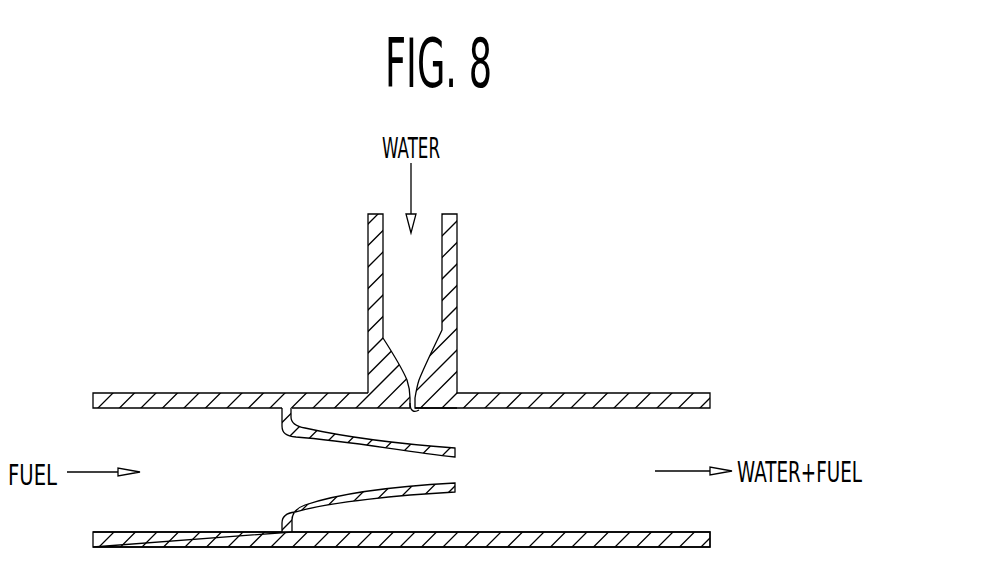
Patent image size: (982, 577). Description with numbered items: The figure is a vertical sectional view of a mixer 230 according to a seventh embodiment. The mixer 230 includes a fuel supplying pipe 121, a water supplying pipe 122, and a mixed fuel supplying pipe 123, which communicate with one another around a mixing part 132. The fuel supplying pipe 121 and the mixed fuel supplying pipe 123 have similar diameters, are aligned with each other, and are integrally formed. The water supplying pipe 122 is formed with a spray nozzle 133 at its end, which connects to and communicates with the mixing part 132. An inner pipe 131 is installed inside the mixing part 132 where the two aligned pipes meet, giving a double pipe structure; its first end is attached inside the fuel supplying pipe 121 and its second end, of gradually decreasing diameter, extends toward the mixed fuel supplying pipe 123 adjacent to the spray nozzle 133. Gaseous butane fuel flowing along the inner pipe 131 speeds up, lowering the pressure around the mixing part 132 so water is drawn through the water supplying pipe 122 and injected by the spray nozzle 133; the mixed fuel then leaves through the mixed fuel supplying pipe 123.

The mixer 230 is at (639, 231).
The fuel supplying pipe 121 is at (210, 398).
The water supplying pipe 122 is at (452, 270).
The mixed fuel supplying pipe 123 is at (620, 400).
The inner pipe 131 is at (294, 430).
The mixing part 132 is at (500, 478).
The spray nozzle 133 is at (414, 409).